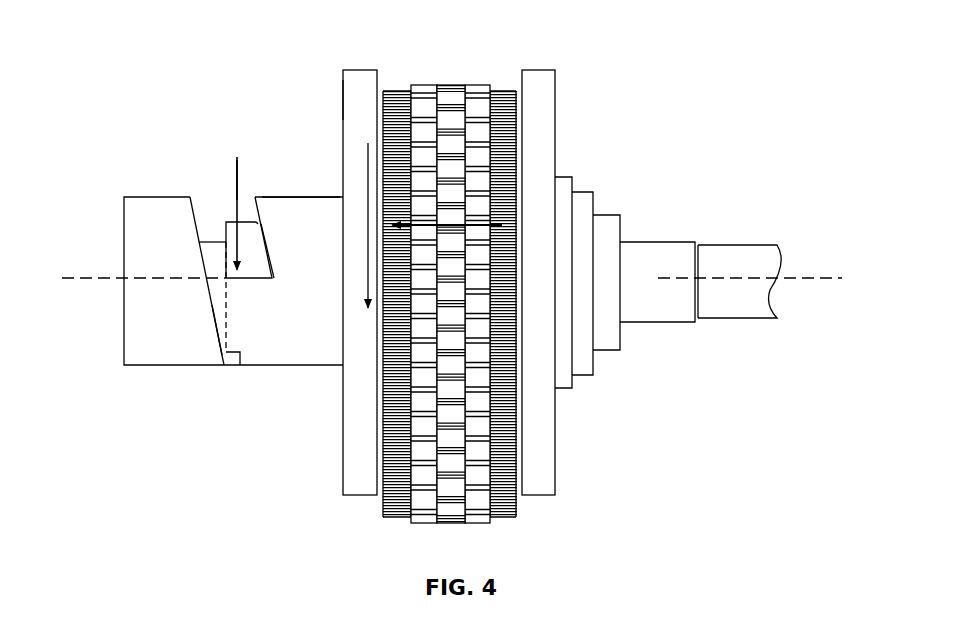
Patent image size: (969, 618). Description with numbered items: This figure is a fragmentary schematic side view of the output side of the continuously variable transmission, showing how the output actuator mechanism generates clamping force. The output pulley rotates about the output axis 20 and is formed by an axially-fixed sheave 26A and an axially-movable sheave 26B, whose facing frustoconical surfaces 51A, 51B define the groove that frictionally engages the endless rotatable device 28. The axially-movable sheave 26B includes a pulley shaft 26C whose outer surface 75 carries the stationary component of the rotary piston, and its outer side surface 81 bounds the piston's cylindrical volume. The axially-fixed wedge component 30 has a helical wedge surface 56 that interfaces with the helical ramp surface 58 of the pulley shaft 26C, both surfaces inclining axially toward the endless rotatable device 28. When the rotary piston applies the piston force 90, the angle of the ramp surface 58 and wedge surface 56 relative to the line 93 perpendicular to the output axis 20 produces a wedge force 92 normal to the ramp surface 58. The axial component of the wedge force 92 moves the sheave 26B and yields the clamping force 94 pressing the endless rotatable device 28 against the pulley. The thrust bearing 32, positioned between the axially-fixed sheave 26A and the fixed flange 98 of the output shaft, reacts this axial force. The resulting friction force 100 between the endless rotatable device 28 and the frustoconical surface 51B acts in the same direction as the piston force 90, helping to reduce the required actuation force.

The output axis 20 is at (110, 275).
The axially-fixed sheave 26A is at (552, 95).
The axially-movable sheave 26B is at (360, 70).
The pulley shaft 26C is at (247, 208).
The endless rotatable device 28 is at (436, 264).
The wedge component 30 is at (168, 195).
The thrust bearing 32 is at (582, 190).
The frustoconical surface 51A is at (515, 89).
The frustoconical surface 51B is at (383, 90).
The wedge surface 56 is at (200, 238).
The ramp surface 58 is at (238, 182).
The outer surface 75 is at (304, 188).
The outer side surface 81 is at (341, 98).
The piston force 90 is at (237, 157).
The wedge force 92 is at (215, 327).
The line perpendicular to the output axis 93 is at (228, 296).
The clamping force 94 is at (483, 225).
The fixed flange 98 is at (607, 213).
The friction force 100 is at (368, 240).